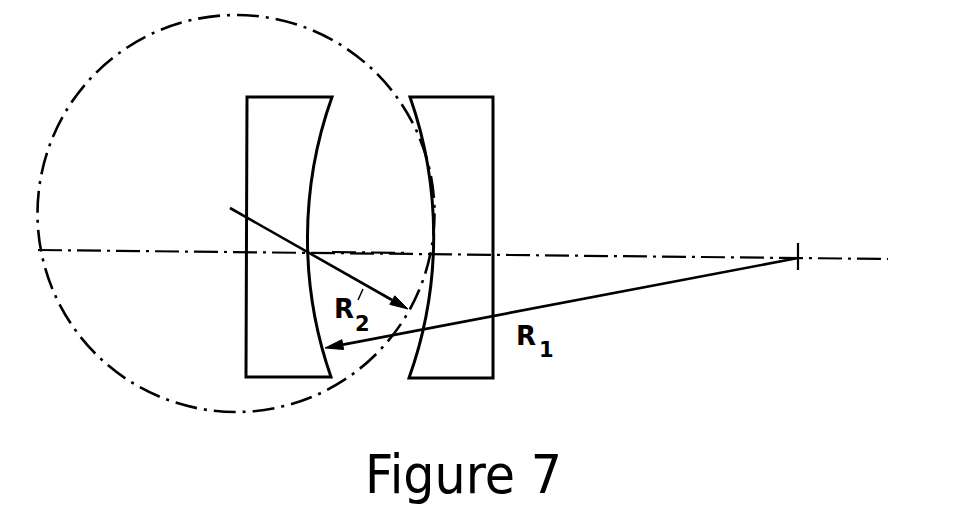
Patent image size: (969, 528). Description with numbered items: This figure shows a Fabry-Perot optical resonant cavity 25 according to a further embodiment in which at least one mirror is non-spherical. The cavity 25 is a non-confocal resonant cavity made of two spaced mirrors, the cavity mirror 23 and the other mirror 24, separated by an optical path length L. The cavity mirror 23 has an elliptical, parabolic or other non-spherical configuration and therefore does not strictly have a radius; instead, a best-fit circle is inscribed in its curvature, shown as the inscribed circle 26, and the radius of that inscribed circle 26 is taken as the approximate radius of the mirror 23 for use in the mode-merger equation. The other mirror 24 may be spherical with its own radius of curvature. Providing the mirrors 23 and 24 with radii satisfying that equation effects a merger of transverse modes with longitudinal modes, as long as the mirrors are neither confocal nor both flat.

The cavity mirror 23 is at (418, 122).
The other mirror 24 is at (307, 198).
The Fabry-Perot optical resonant cavity 25 is at (376, 232).
The inscribed circle 26 is at (150, 35).